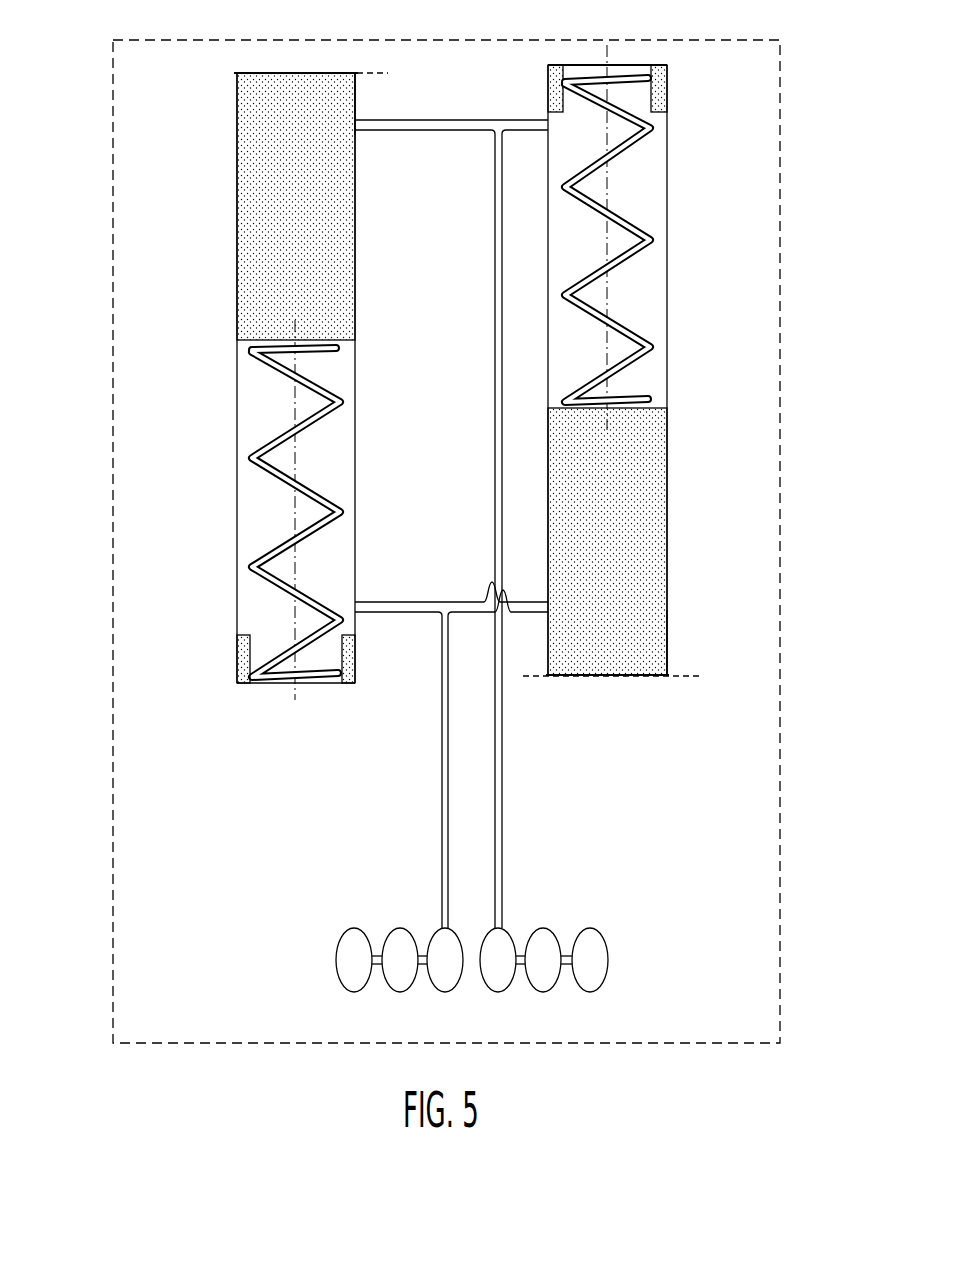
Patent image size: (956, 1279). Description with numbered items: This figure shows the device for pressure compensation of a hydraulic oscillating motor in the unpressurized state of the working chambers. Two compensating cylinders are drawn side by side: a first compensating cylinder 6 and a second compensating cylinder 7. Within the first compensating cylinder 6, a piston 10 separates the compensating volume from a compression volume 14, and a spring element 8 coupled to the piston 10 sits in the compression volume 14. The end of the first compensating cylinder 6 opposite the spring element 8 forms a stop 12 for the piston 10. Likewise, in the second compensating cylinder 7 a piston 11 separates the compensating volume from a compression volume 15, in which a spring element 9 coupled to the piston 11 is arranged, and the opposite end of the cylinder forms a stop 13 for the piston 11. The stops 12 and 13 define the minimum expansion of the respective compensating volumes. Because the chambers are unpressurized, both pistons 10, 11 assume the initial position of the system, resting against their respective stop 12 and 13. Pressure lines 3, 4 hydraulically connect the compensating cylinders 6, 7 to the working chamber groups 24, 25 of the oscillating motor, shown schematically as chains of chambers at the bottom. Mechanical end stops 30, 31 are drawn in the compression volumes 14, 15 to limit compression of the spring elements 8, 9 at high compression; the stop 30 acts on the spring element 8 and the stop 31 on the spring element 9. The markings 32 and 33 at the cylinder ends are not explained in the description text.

The pressure line 3 is at (501, 860).
The pressure line 4 is at (443, 860).
The first compensating cylinder 6 is at (237, 385).
The second compensating cylinder 7 is at (667, 295).
The spring element 8 is at (275, 578).
The spring element 9 is at (636, 230).
The piston 10 is at (258, 168).
The piston 11 is at (652, 570).
The stop 12 is at (222, 73).
The stop 13 is at (679, 677).
The compression volume 14 is at (256, 488).
The compression volume 15 is at (651, 153).
The working chamber group 24 is at (608, 967).
The working chamber group 25 is at (338, 968).
The stop 30 is at (242, 656).
The stop 31 is at (556, 82).
The first end position 32 is at (362, 82).
The second end position 33 is at (676, 660).